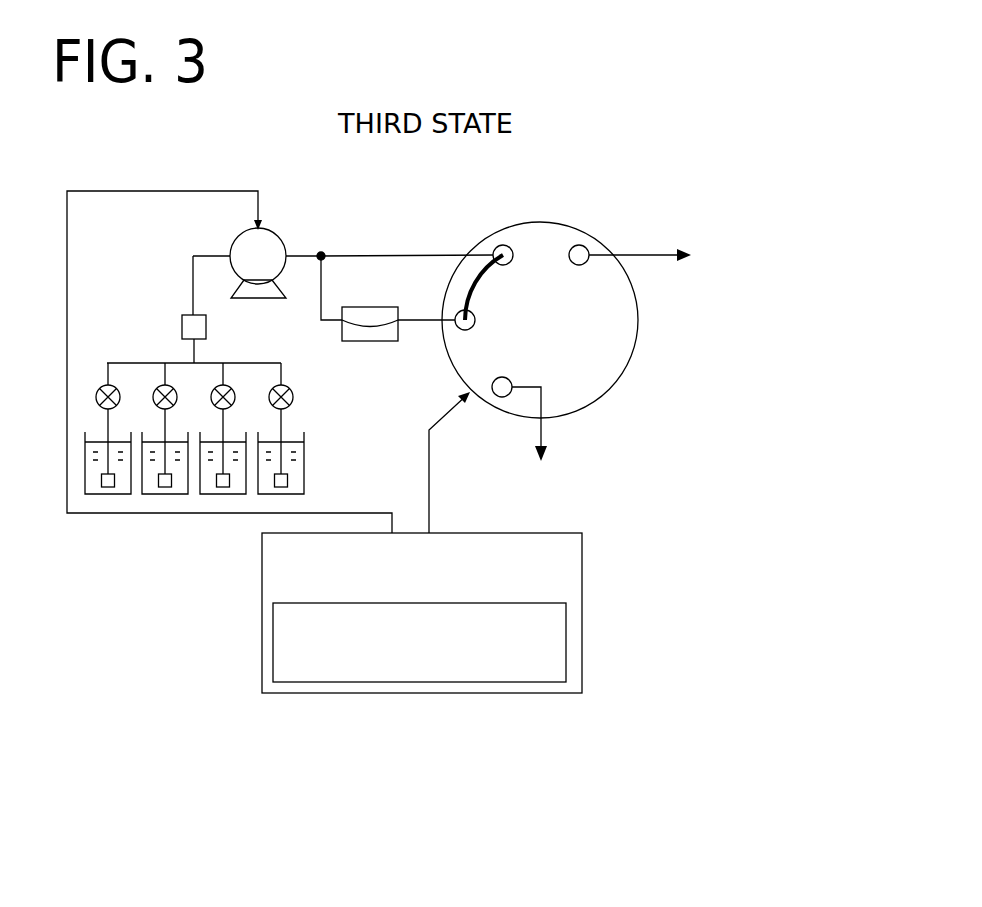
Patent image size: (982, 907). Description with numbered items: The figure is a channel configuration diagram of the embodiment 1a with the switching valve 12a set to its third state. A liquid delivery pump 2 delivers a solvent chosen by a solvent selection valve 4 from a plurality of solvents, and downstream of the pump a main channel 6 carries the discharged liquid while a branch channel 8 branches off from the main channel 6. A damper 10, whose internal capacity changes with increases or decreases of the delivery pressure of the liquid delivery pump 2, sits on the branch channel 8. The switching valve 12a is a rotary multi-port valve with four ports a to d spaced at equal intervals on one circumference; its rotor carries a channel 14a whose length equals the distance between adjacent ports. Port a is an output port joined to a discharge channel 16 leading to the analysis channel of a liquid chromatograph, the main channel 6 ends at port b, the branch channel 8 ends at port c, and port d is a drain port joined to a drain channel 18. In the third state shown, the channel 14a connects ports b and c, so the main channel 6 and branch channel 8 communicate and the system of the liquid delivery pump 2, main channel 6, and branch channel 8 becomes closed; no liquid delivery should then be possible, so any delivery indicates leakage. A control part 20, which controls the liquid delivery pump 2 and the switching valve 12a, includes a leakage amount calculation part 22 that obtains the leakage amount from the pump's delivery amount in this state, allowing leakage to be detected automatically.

The embodiment 1a is at (247, 156).
The liquid delivery pump 2 is at (272, 233).
The solvent selection valve 4 is at (293, 392).
The main channel 6 is at (366, 253).
The branch channel 8 is at (318, 305).
The damper 10 is at (372, 342).
The switching valve 12a is at (556, 222).
The channel 14a is at (468, 283).
The discharge channel 16 is at (647, 252).
The drain channel 18 is at (544, 432).
The control part 20 is at (583, 543).
The leakage amount calculation part 22 is at (567, 623).